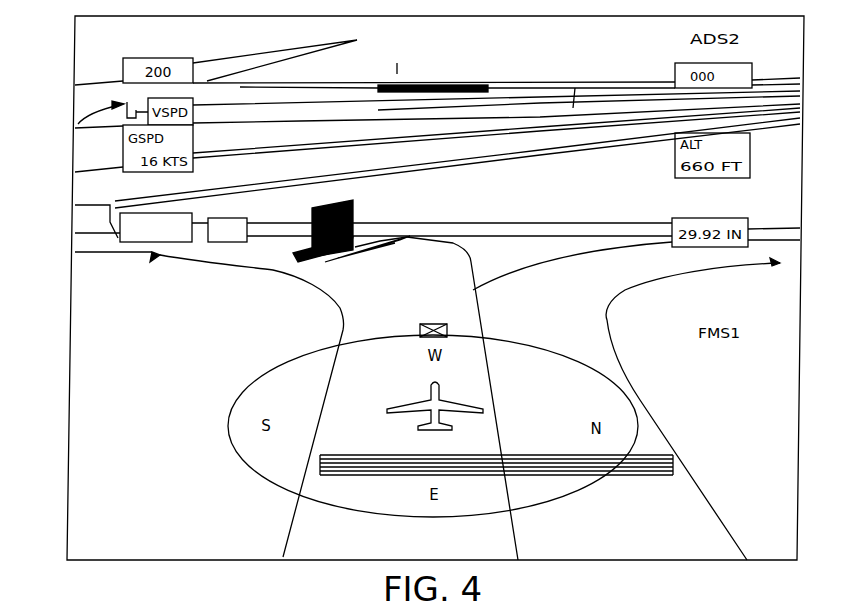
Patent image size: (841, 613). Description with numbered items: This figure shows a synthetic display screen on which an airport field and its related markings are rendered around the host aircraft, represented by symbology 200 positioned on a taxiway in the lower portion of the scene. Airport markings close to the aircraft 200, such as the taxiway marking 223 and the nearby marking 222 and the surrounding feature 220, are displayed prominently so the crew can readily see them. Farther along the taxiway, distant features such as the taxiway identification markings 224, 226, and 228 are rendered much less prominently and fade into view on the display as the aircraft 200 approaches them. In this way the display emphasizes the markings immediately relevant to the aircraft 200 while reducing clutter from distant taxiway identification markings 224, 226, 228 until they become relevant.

The host aircraft symbology 200 is at (422, 395).
The lateral navigation corridor 220 is at (295, 252).
The guidance lines 222 is at (232, 206).
The taxiway marking 223 is at (122, 252).
The taxiway identification marking 224 is at (78, 124).
The taxiway identification marking 226 is at (575, 100).
The taxiway identification marking 228 is at (400, 70).